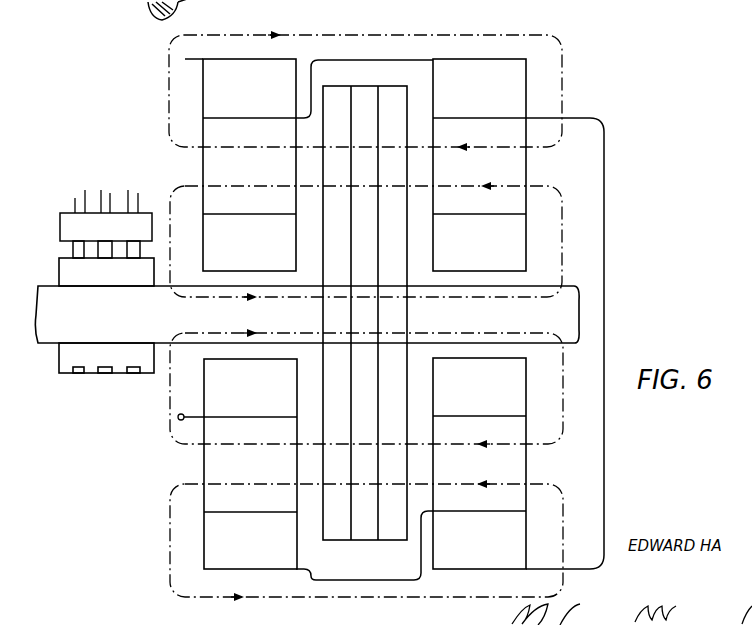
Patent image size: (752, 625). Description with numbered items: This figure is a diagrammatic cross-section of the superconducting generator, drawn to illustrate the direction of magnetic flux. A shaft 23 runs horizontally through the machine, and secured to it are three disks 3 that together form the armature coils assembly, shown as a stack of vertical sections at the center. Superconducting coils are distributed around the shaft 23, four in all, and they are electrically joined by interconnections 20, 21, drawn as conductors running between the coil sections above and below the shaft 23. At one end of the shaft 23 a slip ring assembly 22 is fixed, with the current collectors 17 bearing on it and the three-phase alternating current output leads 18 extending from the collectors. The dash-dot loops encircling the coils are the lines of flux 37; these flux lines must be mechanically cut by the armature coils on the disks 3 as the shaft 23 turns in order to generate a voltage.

The disks 3 is at (344, 511).
The current collectors 17 is at (139, 252).
The three-phase alternating current output leads 18 is at (88, 207).
The interconnection between superconducting coils 20 is at (185, 59).
The interconnection between superconducting coils 21 is at (300, 118).
The slip ring assembly 22 is at (88, 375).
The shaft 23 is at (401, 320).
The lines of flux 37 is at (562, 86).